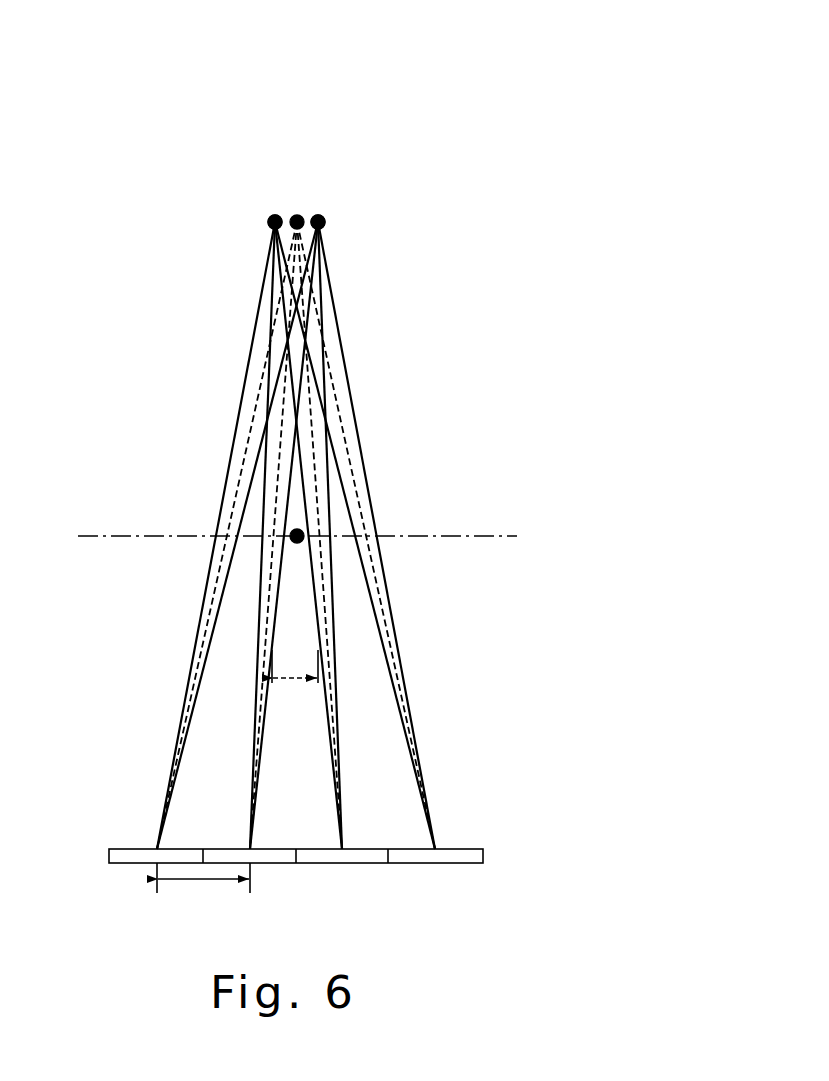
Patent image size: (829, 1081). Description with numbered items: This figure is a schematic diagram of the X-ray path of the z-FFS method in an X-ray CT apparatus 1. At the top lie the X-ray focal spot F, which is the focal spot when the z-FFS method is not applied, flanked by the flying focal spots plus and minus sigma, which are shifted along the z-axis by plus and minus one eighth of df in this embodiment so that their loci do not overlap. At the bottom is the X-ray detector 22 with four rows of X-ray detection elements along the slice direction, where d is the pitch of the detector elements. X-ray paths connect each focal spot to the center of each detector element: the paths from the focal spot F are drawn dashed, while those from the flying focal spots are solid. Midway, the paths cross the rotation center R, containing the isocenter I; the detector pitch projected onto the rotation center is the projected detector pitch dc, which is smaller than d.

The optical system / distance measuring apparatus 1 is at (382, 90).
The X-ray detector 22 is at (463, 846).
The X-ray focal spot F is at (297, 214).
The isocenter I is at (291, 528).
The rotation center R is at (447, 533).
The projected detector pitch dc is at (295, 682).
The pitch of the X-ray detector elements d is at (203, 890).